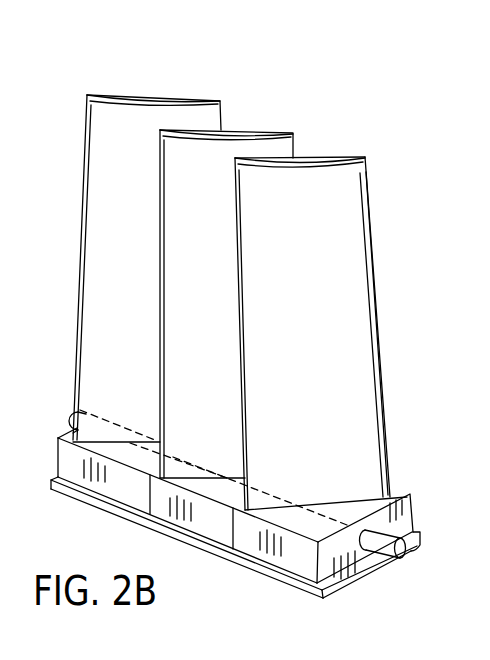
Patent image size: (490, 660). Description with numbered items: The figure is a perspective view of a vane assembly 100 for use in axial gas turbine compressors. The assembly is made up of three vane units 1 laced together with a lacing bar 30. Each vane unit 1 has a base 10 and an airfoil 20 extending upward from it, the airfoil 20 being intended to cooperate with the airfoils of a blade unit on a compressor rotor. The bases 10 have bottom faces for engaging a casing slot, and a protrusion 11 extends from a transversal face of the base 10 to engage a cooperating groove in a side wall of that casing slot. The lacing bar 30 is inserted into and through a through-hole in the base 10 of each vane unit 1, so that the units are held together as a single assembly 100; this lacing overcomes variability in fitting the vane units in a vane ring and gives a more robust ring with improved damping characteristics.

The vane assembly 100 is at (415, 35).
The vane unit 1 is at (233, 112).
The base 10 is at (318, 588).
The protrusion 11 is at (287, 587).
The airfoil 20 is at (362, 437).
The lacing bar 30 is at (397, 560).